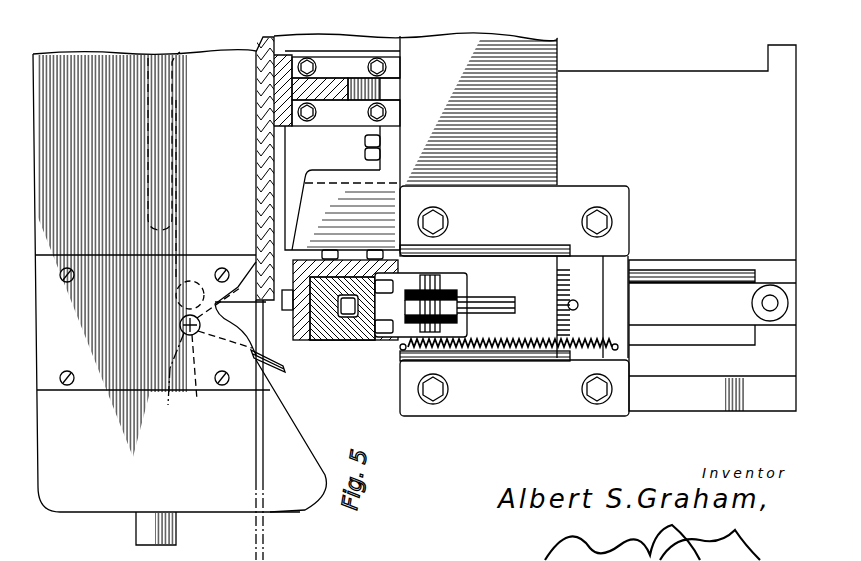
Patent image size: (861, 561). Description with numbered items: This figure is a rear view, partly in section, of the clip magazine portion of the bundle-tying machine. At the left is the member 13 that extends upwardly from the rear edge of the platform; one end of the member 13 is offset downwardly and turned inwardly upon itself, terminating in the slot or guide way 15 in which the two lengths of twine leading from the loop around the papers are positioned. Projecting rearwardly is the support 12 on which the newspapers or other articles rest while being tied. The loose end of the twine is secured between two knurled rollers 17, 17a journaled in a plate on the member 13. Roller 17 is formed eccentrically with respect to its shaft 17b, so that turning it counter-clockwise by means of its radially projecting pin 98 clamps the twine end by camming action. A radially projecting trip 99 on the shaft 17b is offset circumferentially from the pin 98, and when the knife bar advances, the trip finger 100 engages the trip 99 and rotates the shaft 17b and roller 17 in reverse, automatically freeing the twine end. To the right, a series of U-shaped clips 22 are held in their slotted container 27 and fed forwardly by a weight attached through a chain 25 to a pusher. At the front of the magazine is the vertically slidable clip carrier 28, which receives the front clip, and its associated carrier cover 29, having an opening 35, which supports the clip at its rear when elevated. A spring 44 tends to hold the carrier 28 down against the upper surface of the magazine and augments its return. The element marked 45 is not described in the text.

The member 13 is at (35, 210).
The trip finger 100 is at (178, 108).
The support 12 is at (256, 150).
The knurled roller 17a is at (186, 270).
The shaft 17b is at (182, 328).
The trip 99 is at (171, 381).
The knurled roller 17 is at (195, 382).
The slot or guide way 15 is at (237, 308).
The pin 98 is at (286, 372).
The U-shaped clips 22 is at (325, 340).
The container 27 is at (352, 340).
The opening 35 is at (392, 337).
The spring 44 is at (515, 305).
The chain 25 is at (512, 265).
The carrier cover 29 is at (505, 245).
The rack 45 is at (622, 250).
The clip carrier 28 is at (629, 240).